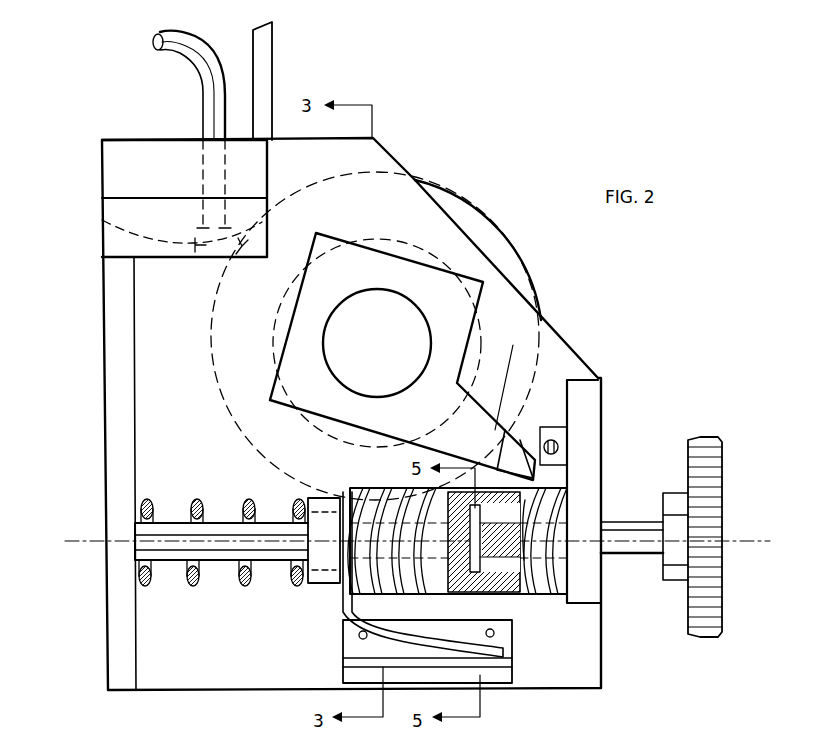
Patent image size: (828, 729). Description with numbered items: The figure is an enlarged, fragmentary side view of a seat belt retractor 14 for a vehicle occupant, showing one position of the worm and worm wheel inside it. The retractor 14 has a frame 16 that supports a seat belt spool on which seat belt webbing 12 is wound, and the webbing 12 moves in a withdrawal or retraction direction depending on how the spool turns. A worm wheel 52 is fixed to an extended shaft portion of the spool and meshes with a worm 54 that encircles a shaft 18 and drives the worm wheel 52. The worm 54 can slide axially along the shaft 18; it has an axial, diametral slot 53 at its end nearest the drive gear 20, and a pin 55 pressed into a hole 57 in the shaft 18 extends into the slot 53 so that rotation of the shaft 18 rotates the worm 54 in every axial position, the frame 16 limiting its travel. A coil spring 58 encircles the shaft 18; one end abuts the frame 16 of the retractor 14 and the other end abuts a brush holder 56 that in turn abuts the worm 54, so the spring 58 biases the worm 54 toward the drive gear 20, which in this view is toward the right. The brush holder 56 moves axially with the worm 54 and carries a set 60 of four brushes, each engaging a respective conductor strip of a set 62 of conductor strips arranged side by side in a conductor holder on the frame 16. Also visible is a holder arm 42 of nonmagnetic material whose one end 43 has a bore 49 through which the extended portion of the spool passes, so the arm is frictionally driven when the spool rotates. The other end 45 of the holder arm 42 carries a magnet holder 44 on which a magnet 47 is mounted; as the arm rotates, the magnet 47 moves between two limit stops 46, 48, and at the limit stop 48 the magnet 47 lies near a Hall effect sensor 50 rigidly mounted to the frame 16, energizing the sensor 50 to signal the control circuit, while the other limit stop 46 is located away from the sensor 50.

The seat belt webbing 12 is at (263, 78).
The seat belt retractor 14 is at (68, 121).
The frame 16 is at (127, 650).
The shaft 18 is at (218, 560).
The drive gear 20 is at (686, 640).
The holder arm 42 is at (497, 269).
The end of holder arm 43 is at (375, 277).
The magnet holder 44 is at (512, 421).
The other end of holder arm 45 is at (567, 383).
The limit stop 46 is at (554, 433).
The magnet 47 is at (510, 380).
The limit stop 48 is at (220, 247).
The bore 49 is at (420, 350).
The Hall effect sensor 50 is at (197, 240).
The worm wheel 52 is at (138, 418).
The slot 53 is at (522, 488).
The worm 54 is at (517, 592).
The pin 55 is at (545, 592).
The brush holder 56 is at (340, 608).
The hole 57 is at (565, 538).
The coil spring 58 is at (137, 575).
The set of brushes 60 is at (483, 660).
The set of conductor strips 62 is at (347, 670).